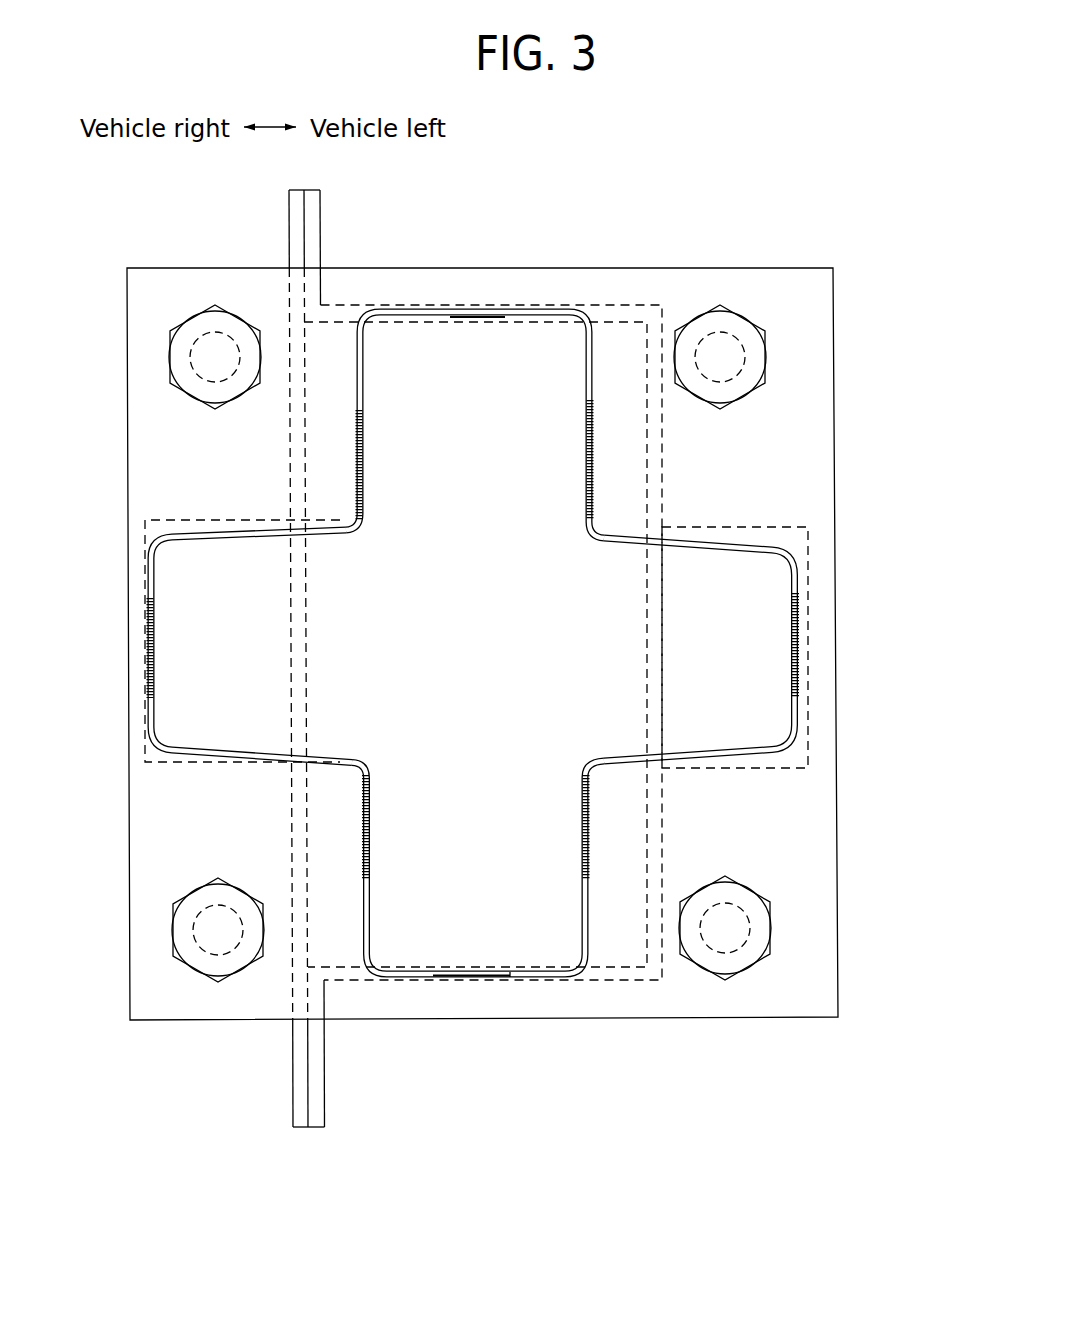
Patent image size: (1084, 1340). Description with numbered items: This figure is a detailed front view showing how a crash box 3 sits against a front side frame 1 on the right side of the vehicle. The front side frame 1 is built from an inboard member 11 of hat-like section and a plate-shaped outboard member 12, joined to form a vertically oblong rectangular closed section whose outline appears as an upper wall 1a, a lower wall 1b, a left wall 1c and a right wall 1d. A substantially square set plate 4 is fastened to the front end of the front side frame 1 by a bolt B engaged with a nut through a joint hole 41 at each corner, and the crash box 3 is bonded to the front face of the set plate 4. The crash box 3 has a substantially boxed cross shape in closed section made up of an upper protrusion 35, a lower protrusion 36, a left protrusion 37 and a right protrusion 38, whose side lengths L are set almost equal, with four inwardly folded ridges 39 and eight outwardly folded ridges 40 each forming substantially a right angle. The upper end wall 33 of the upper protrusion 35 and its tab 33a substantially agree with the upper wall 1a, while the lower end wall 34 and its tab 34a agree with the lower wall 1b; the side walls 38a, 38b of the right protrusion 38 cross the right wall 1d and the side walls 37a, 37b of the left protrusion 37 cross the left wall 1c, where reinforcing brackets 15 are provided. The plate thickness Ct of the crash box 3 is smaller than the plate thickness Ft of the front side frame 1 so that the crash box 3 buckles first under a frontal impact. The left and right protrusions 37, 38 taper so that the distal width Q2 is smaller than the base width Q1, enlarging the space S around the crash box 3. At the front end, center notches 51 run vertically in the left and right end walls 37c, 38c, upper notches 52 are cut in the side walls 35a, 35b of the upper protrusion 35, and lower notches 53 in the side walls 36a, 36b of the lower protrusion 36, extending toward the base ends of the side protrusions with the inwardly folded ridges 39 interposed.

The front side frame 1 is at (528, 684).
The upper wall 1a is at (597, 306).
The lower wall 1b is at (580, 980).
The left wall 1c is at (663, 848).
The right wall 1d is at (293, 937).
The crash box 3 is at (502, 607).
The set plate 4 is at (802, 297).
The inboard member 11 is at (325, 1103).
The outboard member 12 is at (293, 1112).
The reinforcing bracket 15 is at (150, 520).
The upper end wall 33 is at (481, 302).
The upper wall tab 33a is at (470, 320).
The lower end wall 34 is at (476, 992).
The lower wall tab 34a is at (480, 968).
The upper protrusion 35 is at (531, 376).
The side wall of upper protrusion 35a is at (592, 394).
The side wall of upper protrusion 35b is at (365, 403).
The lower protrusion 36 is at (554, 917).
The side wall of lower protrusion 36a is at (583, 895).
The side wall of lower protrusion 36b is at (368, 902).
The left protrusion 37 is at (765, 617).
The side wall of left protrusion 37a is at (680, 535).
The side wall of left protrusion 37b is at (707, 760).
The left end wall 37c is at (793, 590).
The right protrusion 38 is at (215, 622).
The side wall of right protrusion 38a is at (243, 527).
The side wall of right protrusion 38b is at (223, 765).
The right end wall 38c is at (146, 574).
The inwardly folded ridge 39 is at (354, 521).
The outwardly folded ridge 40 is at (368, 313).
The joint hole 41 is at (198, 335).
The center notch 51 is at (153, 654).
The upper notch 52 is at (364, 484).
The lower notch 53 is at (365, 812).
The bolt B is at (177, 380).
The space S is at (199, 445).
The length of side of protrusion L is at (555, 290).
The width of base part Q1 is at (613, 542).
The width of distal part Q2 is at (768, 552).
The plate thickness of front side frame Ft is at (625, 673).
The plate thickness of crash box Ct is at (713, 565).